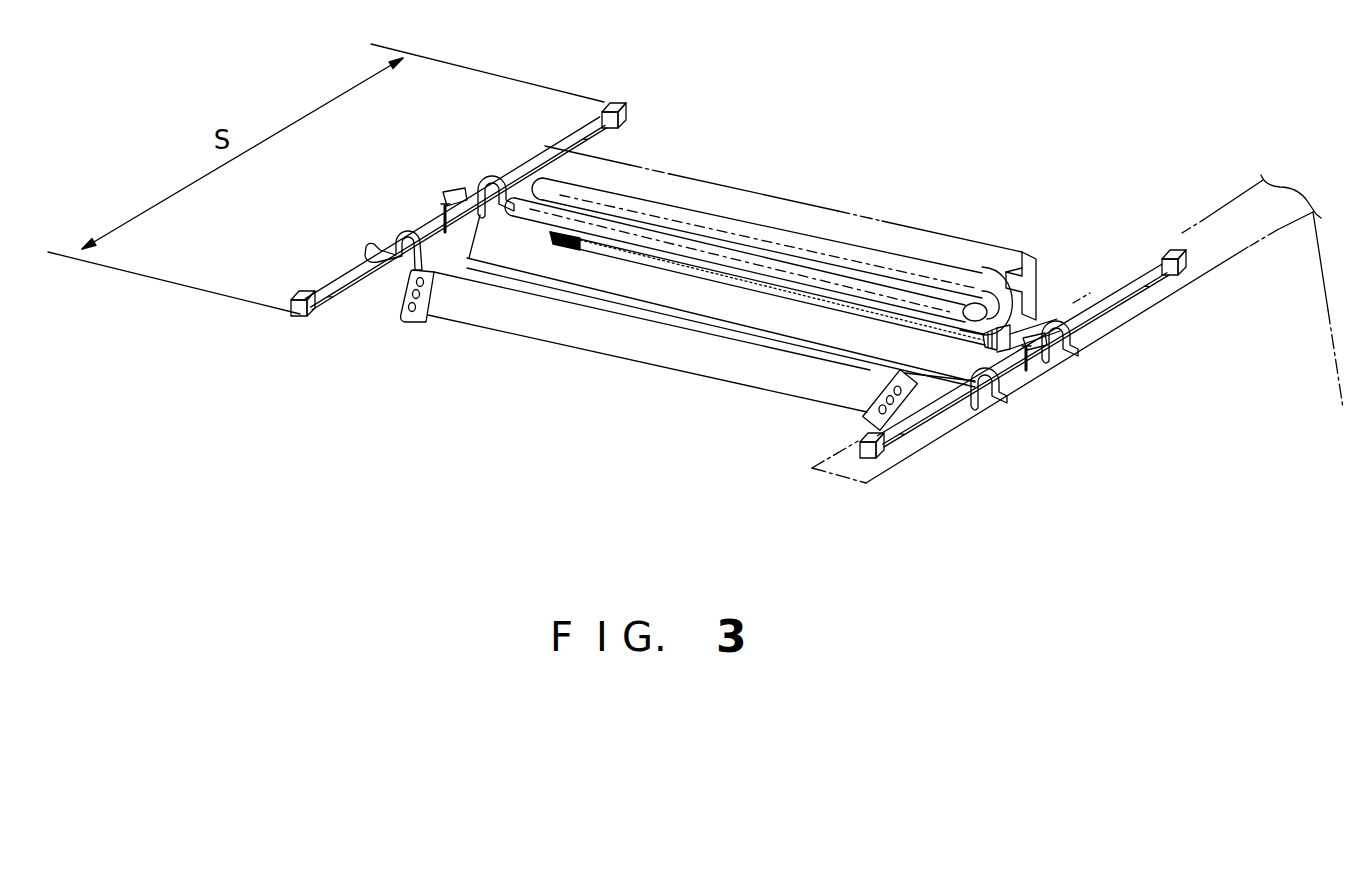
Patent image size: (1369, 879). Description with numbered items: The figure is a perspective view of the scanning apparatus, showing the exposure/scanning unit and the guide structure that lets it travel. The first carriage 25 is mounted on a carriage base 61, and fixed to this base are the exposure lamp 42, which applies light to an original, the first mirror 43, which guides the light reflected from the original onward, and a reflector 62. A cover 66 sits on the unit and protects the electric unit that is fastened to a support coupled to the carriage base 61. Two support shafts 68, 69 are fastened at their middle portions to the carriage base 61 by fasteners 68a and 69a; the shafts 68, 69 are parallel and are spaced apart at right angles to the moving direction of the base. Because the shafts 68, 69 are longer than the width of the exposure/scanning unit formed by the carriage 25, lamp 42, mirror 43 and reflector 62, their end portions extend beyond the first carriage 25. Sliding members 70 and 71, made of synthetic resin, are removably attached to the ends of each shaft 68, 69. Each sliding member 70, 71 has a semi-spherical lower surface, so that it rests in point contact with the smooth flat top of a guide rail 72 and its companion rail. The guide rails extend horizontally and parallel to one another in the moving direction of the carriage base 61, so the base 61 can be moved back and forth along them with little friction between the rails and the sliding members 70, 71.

The first carriage 25 is at (495, 247).
The exposure lamp 42 is at (940, 303).
The first mirror 43 is at (555, 332).
The carriage base 61 is at (715, 314).
The reflector 62 is at (830, 240).
The cover 66 is at (735, 190).
The support shaft 68 is at (955, 400).
The fastener 68a is at (1040, 355).
The support shaft 69 is at (520, 168).
The fastener 69a is at (443, 205).
The sliding member 70 is at (627, 112).
The sliding member 71 is at (303, 318).
The guide rail 72 is at (833, 470).